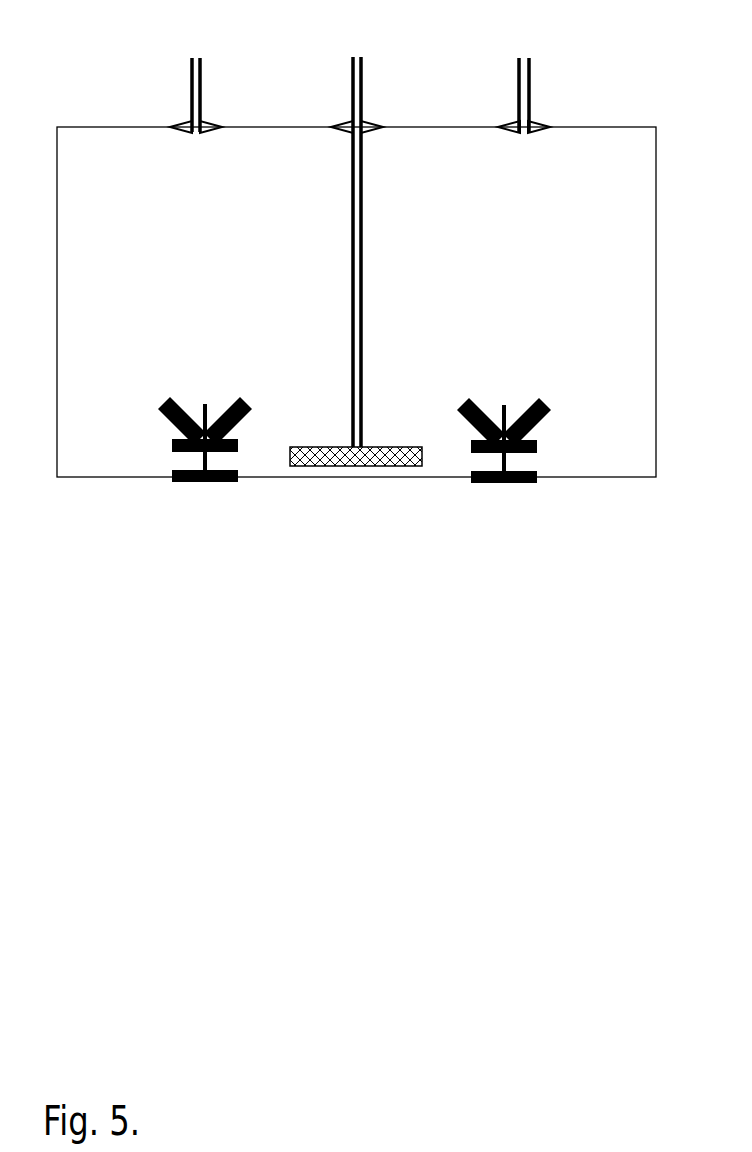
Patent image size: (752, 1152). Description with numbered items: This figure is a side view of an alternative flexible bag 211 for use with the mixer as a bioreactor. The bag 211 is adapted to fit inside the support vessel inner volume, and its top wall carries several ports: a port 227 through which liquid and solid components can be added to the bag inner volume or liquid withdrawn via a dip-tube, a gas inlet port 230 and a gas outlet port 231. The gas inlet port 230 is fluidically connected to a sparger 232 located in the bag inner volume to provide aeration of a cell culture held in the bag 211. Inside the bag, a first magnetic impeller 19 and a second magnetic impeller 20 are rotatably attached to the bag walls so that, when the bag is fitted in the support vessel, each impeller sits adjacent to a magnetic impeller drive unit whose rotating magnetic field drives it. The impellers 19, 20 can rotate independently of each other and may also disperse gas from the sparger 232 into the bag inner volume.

The first magnetic impeller 19 is at (173, 445).
The second magnetic impeller 20 is at (537, 452).
The bag 211 is at (373, 672).
The port 227 is at (192, 120).
The gas inlet port 230 is at (357, 120).
The gas outlet port 231 is at (517, 120).
The sparger 232 is at (322, 458).